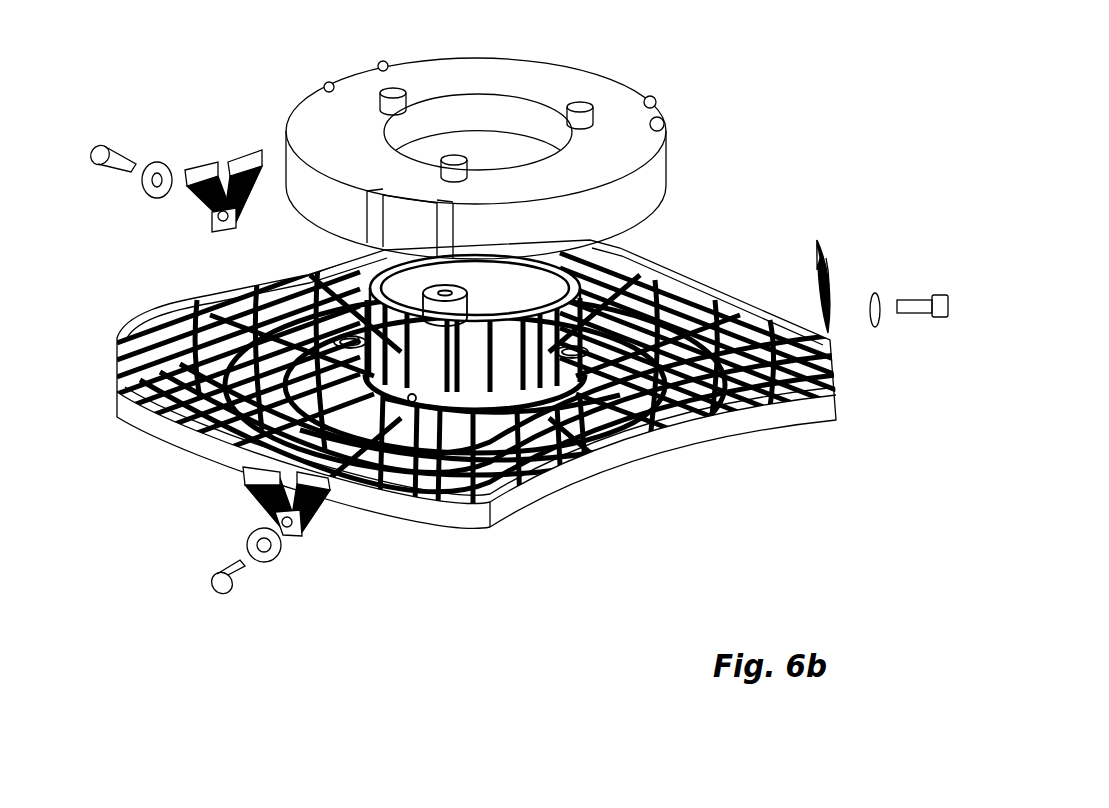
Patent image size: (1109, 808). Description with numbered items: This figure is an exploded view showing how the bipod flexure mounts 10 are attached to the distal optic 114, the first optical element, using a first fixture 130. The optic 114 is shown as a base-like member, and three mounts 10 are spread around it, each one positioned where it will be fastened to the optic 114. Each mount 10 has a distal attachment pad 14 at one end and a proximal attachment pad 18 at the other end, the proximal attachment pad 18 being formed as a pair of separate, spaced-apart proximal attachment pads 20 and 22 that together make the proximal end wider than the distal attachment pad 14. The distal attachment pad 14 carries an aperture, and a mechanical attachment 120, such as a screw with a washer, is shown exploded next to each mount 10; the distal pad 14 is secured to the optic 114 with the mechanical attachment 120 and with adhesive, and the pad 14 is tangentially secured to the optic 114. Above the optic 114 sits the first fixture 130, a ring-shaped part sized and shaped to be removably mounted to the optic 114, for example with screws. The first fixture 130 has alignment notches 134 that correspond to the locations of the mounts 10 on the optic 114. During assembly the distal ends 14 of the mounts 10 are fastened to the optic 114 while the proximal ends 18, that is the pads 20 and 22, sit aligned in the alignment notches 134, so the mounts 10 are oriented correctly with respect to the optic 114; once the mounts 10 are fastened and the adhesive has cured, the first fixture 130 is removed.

The bipod flexure mount 10 is at (523, 340).
The distal attachment pad 14 is at (873, 357).
The proximal attachment pad 18 is at (233, 162).
The proximal attachment pad 20 is at (192, 170).
The proximal attachment pad 22 is at (245, 160).
The distal optic 114 is at (745, 437).
The mechanical attachment 120 is at (113, 148).
The first fixture 130 is at (497, 134).
The alignment notch 134 is at (367, 68).